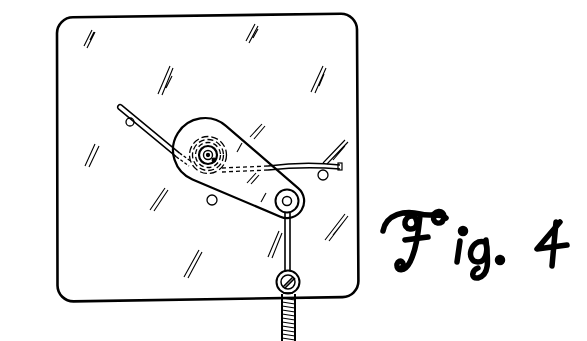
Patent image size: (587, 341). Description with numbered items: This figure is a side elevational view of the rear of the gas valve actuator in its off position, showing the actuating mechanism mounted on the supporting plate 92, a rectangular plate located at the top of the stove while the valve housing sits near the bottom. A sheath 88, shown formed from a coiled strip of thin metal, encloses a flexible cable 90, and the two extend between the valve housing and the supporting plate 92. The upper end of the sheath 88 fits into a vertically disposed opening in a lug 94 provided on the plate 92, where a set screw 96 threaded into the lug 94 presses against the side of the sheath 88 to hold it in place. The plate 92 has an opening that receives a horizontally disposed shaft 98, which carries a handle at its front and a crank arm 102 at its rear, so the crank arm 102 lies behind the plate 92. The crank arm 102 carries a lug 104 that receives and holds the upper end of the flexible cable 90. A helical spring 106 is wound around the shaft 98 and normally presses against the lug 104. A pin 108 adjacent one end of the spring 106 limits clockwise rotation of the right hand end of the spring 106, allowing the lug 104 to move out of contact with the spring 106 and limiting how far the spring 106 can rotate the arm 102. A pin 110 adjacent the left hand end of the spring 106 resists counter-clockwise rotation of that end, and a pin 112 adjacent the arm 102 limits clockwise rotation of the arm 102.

The sheath 88 is at (296, 320).
The flexible cable 90 is at (288, 258).
The supporting plate 92 is at (347, 85).
The lug 94 is at (282, 288).
The set screw 96 is at (300, 287).
The shaft 98 is at (190, 160).
The crank arm 102 is at (218, 130).
The lug 104 is at (307, 198).
The helical spring 106 is at (307, 163).
The pin 108 is at (341, 168).
The pin 110 is at (126, 122).
The pin 112 is at (209, 204).